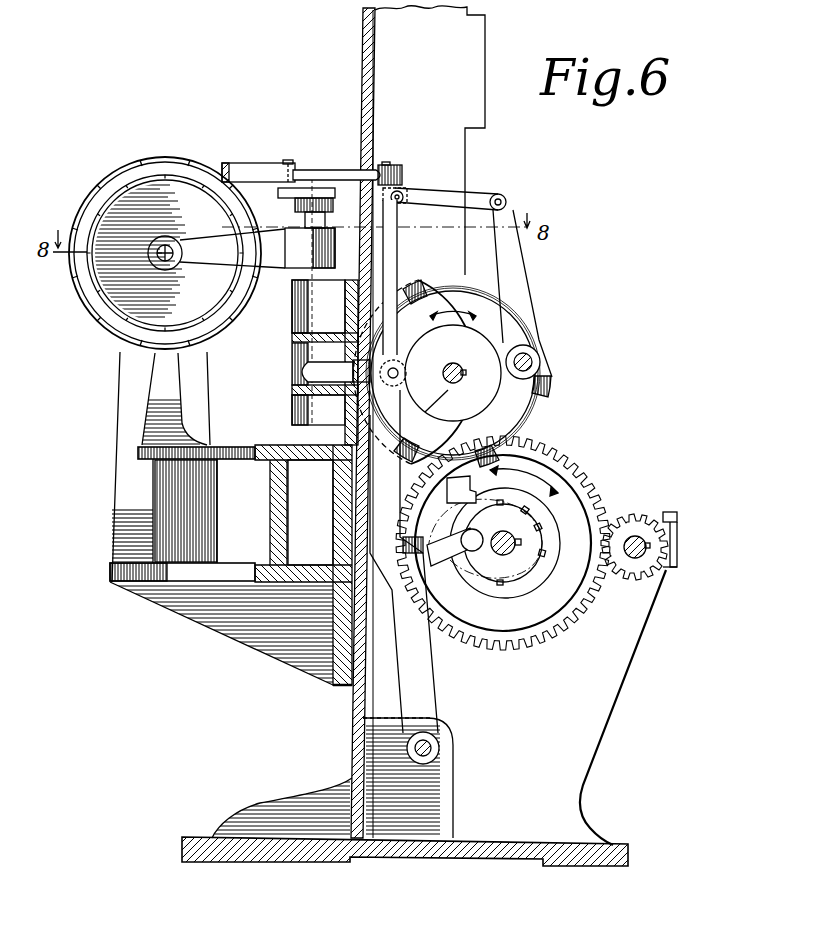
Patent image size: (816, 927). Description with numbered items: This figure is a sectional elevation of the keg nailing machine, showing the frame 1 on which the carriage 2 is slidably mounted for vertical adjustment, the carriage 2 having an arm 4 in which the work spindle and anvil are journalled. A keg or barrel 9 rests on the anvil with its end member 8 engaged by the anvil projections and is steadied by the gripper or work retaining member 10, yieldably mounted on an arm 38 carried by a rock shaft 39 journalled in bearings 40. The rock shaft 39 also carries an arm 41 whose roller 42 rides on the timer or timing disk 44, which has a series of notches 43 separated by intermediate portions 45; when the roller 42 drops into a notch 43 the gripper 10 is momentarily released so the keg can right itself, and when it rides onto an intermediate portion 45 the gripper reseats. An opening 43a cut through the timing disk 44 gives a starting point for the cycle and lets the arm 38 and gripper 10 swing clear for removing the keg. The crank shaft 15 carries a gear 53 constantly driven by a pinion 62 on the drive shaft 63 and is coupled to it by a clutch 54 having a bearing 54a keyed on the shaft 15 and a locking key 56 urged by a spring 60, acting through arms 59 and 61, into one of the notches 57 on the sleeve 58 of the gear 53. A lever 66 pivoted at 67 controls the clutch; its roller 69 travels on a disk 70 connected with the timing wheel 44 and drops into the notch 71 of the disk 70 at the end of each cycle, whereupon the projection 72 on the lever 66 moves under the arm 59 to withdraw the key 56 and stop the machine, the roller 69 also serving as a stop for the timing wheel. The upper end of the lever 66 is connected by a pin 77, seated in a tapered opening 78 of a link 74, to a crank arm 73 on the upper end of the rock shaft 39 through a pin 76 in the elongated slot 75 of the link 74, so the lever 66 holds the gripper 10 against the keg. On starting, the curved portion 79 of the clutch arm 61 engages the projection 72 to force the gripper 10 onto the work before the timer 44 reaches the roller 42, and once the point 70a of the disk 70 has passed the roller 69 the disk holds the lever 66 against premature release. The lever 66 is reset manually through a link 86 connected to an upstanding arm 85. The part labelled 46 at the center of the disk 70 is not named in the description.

The frame 1 is at (432, 92).
The carriage 2 is at (231, 565).
The arm 4 is at (125, 378).
The end member 8 is at (165, 253).
The keg or barrel 9 is at (112, 193).
The work steadying or retaining member 10 is at (158, 270).
The shaft 15 is at (510, 550).
The arm 38 is at (280, 250).
The rock shaft 39 is at (298, 212).
The bearings 40 is at (293, 403).
The arm 41 is at (333, 380).
The roller 42 is at (318, 306).
The notches or recesses 43 is at (402, 287).
The opening 43a is at (360, 430).
The timer 44 is at (548, 350).
The intermediate portions 45 is at (467, 283).
The cam shaft 46 is at (453, 378).
The gear 53 is at (540, 640).
The clutch 54 is at (567, 577).
The bearing 54a is at (545, 470).
The locking key 56 is at (473, 573).
The notches 57 is at (550, 537).
The sleeve 58 is at (555, 520).
The arm 59 is at (445, 565).
The spring 60 is at (427, 550).
The arm 61 is at (457, 492).
The pinion 62 is at (680, 562).
The drive shaft 63 is at (680, 516).
The lever 66 is at (427, 683).
The pivot 67 is at (437, 744).
The roller 69 is at (429, 417).
The disk 70 is at (477, 340).
The point 70a is at (403, 360).
The notch 71 is at (405, 363).
The projection 72 is at (347, 588).
The crank arm 73 is at (320, 187).
The link 74 is at (357, 173).
The elongated opening 75 is at (232, 165).
The pin 76 is at (293, 162).
The pin 77 is at (387, 163).
The tapered opening 78 is at (407, 172).
The curved portion 79 is at (423, 540).
The upstanding arm 85 is at (508, 210).
The link 86 is at (478, 197).